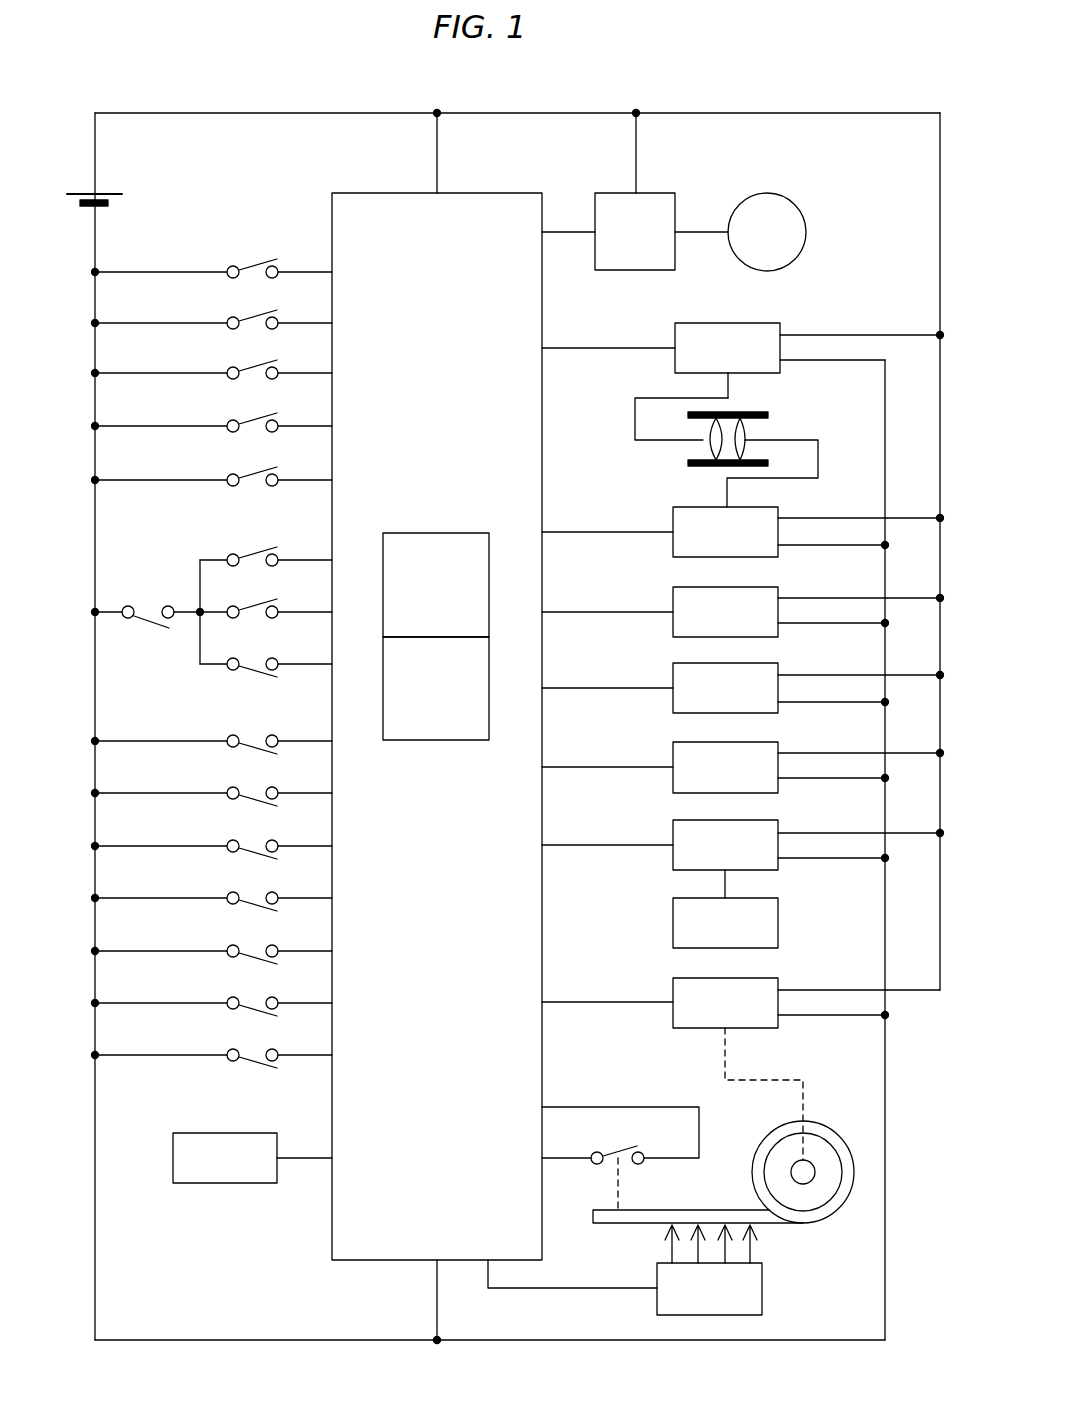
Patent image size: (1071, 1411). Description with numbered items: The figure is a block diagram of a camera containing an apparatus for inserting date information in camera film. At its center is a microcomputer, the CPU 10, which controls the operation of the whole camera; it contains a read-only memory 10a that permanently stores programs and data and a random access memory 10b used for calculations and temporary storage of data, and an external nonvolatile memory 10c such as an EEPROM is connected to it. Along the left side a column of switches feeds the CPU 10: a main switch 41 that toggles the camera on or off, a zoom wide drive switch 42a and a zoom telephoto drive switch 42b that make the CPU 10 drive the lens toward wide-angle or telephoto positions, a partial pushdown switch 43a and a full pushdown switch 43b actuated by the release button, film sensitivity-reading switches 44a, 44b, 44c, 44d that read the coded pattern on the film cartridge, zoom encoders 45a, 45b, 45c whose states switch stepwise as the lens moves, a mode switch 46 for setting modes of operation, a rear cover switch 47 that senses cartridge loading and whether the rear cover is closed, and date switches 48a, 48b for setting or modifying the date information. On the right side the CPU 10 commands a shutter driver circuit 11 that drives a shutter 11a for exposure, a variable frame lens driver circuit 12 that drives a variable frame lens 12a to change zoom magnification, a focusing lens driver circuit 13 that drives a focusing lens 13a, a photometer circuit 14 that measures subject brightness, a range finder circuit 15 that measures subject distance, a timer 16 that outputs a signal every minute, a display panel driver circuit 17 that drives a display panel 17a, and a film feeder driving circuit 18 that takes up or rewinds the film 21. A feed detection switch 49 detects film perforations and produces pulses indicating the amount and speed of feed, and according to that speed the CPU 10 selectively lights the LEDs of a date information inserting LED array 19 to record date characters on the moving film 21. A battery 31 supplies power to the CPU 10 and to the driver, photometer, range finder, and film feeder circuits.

The microcomputer (CPU) 10 is at (488, 193).
The read-only memory (ROM) 10a is at (437, 533).
The random access memory (RAM) 10b is at (437, 740).
The external nonvolatile memory 10c is at (225, 1183).
The shutter driver circuit 11 is at (648, 193).
The shutter 11a is at (770, 195).
The variable frame lens driver circuit 12 is at (675, 328).
The variable frame lens 12a is at (703, 442).
The focusing lens driver circuit 13 is at (780, 517).
The focusing lens 13a is at (753, 435).
The photometer circuit 14 is at (673, 597).
The range finder circuit 15 is at (673, 677).
The timer 16 is at (673, 756).
The display panel driver circuit 17 is at (673, 835).
The display panel 17a is at (673, 912).
The film feeder driving circuit 18 is at (673, 990).
The date information inserting LED array 19 is at (762, 1287).
The film 21 is at (813, 1120).
The battery 31 is at (82, 192).
The main switch 41 is at (237, 265).
The zoom wide drive switch 42a is at (237, 316).
The zoom telephoto drive switch 42b is at (237, 366).
The partial pushdown switch 43a is at (237, 419).
The full pushdown switch 43b is at (237, 473).
The film sensitivity-reading switch 44a is at (150, 624).
The film sensitivity-reading switch 44b is at (237, 553).
The film sensitivity-reading switch 44c is at (247, 603).
The film sensitivity-reading switch 44d is at (238, 672).
The zoom encoder 45a is at (238, 747).
The zoom encoder 45b is at (238, 799).
The zoom encoder 45c is at (238, 852).
The mode switch 46 is at (238, 904).
The rear cover switch 47 is at (238, 957).
The date switch 48a is at (238, 1009).
The date switch 48b is at (238, 1061).
The feed detection switch 49 is at (628, 1147).